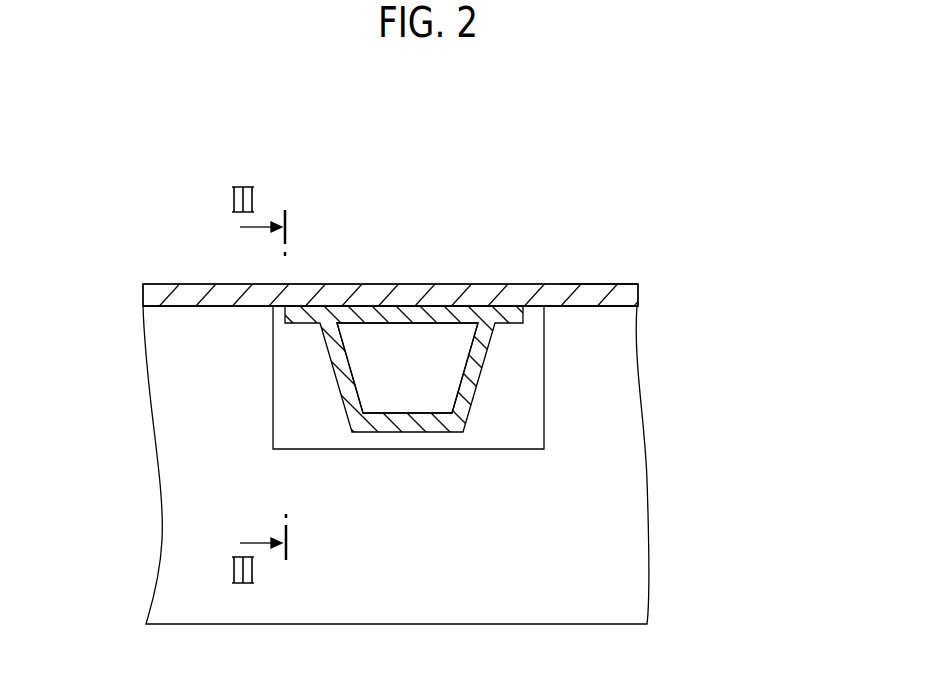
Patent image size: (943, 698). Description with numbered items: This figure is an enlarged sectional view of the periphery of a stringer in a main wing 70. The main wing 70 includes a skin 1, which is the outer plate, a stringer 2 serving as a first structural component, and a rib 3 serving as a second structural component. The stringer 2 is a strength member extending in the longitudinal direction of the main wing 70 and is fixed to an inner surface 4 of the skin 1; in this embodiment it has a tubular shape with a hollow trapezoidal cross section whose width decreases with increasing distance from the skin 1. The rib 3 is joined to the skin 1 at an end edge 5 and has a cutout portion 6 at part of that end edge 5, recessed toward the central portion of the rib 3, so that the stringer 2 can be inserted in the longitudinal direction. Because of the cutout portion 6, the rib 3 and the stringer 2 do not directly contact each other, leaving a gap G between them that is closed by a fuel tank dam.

The main wing 70 is at (743, 127).
The skin 1 is at (488, 284).
The stringer 2 is at (323, 370).
The rib 3 is at (613, 378).
The inner surface 4 is at (166, 307).
The end edge 5 is at (588, 304).
The cutout portion 6 is at (544, 395).
The gap G is at (493, 425).